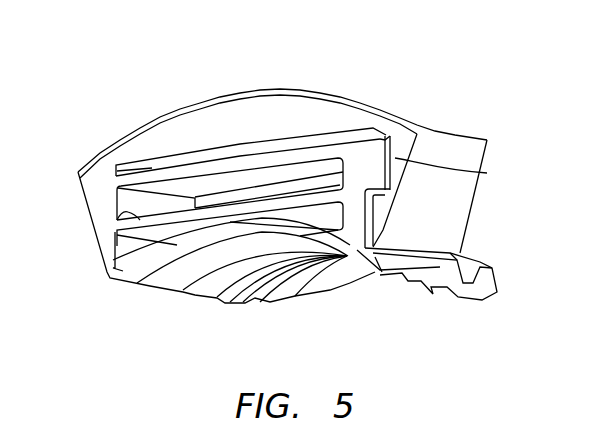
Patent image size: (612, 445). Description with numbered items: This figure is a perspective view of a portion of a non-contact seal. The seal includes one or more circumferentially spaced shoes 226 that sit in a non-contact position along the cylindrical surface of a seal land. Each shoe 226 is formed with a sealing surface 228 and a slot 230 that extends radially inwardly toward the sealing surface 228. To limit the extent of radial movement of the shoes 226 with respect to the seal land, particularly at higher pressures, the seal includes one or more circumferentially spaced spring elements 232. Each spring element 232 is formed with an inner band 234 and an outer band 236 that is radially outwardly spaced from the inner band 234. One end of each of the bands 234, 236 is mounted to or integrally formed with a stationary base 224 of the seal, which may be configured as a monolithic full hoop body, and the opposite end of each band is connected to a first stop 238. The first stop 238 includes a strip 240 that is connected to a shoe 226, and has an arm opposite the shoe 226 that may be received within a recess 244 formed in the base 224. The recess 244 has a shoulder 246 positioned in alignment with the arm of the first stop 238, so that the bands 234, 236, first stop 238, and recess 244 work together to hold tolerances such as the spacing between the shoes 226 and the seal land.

The stationary base 224 is at (353, 110).
The shoe 226 is at (150, 293).
The sealing surface 228 is at (178, 270).
The slot 230 is at (468, 270).
The spring element 232 is at (143, 156).
The inner band 234 is at (117, 213).
The outer band 236 is at (203, 163).
The first stop 238 is at (370, 153).
The strip 240 is at (357, 247).
The recess 244 is at (487, 175).
The shoulder 246 is at (380, 195).